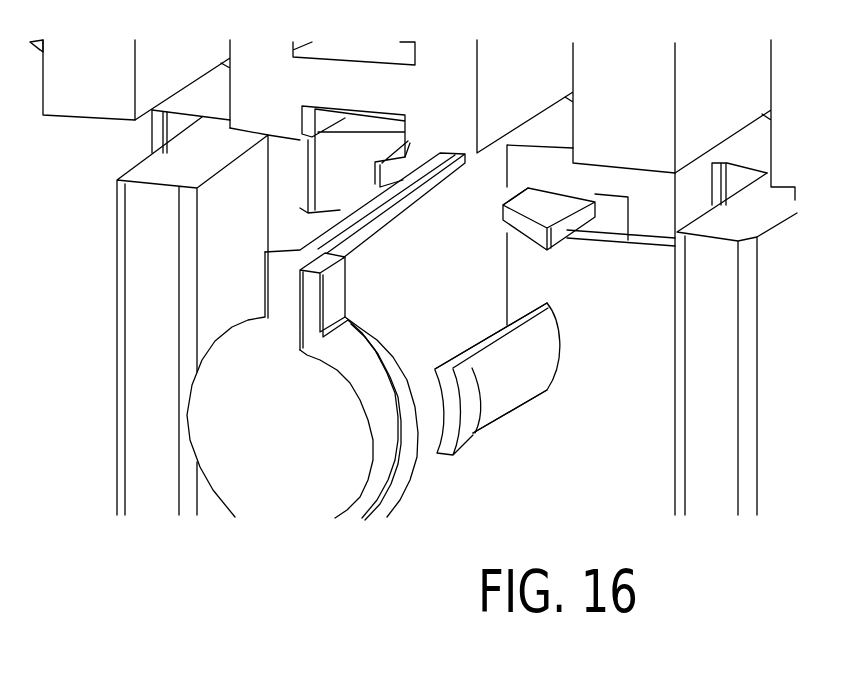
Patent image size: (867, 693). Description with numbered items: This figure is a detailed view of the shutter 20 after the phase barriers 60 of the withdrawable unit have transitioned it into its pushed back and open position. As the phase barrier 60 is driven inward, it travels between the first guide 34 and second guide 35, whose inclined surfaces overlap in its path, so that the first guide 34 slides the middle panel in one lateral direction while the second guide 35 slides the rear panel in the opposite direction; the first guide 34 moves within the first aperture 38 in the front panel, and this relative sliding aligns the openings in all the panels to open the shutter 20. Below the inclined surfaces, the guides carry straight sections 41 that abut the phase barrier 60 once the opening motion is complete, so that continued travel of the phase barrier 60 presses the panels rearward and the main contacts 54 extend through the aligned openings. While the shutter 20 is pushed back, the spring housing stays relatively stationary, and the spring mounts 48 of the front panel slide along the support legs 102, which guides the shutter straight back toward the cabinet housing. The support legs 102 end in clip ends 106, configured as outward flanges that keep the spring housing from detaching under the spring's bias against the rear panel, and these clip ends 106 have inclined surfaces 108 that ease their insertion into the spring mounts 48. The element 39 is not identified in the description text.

The shutter 20 is at (634, 422).
The first guide 34 is at (395, 155).
The second guide 35 is at (549, 219).
The first aperture 38 is at (352, 159).
The bar 39 is at (624, 231).
The straight section 41 is at (511, 200).
The spring mount 48 is at (518, 300).
The main contacts 54 is at (160, 335).
The phase barrier 60 is at (365, 213).
The support leg 102 is at (505, 359).
The clip end 106 is at (448, 362).
The inclined surface 108 is at (470, 437).